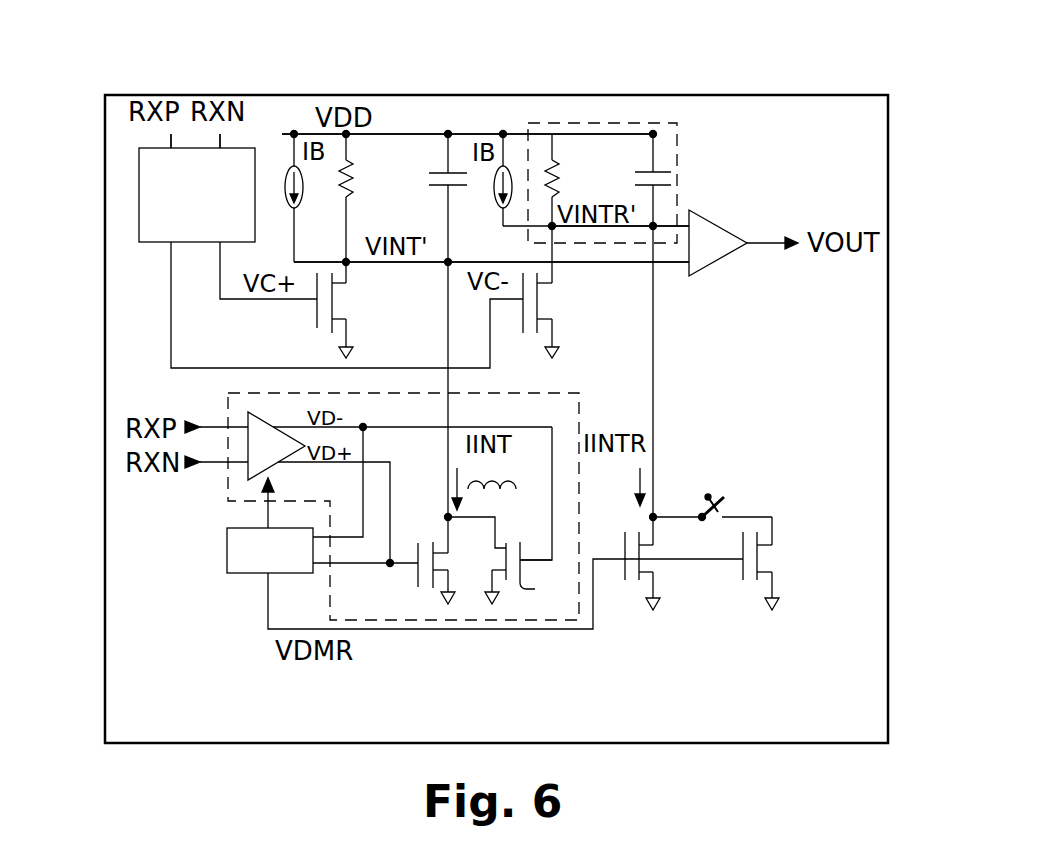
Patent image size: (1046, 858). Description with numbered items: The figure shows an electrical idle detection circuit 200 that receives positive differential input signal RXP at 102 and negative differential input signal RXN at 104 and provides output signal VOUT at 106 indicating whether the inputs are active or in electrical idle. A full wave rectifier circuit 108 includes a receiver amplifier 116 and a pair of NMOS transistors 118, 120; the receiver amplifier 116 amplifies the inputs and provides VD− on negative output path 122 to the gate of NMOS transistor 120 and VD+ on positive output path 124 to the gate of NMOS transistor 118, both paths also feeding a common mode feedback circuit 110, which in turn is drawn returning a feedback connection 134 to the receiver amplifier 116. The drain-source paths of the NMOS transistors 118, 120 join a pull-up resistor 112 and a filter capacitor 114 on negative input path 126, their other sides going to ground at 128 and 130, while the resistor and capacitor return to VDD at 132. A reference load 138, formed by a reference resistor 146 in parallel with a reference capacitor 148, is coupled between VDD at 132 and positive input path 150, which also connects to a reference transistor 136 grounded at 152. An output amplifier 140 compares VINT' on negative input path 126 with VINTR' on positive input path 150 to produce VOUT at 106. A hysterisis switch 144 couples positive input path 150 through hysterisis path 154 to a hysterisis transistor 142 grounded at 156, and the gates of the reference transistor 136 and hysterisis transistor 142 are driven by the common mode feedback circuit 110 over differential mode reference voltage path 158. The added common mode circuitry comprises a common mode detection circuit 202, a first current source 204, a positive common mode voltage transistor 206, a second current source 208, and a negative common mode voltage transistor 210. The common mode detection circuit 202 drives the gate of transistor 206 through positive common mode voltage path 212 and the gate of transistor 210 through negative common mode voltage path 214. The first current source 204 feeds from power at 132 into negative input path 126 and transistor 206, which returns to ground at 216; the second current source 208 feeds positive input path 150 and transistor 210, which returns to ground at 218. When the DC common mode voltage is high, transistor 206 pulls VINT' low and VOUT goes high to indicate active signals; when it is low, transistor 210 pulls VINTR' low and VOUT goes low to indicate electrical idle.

The electrical idle detection circuit 200 is at (652, 68).
The positive differential input signal RXP 102 is at (165, 141).
The negative differential input signal RXN 104 is at (222, 139).
The common mode detection circuit 202 is at (143, 223).
The positive common mode voltage path 212 is at (218, 302).
The negative common mode voltage path 214 is at (170, 352).
The positive common mode voltage transistor 206 is at (317, 338).
The negative common mode voltage transistor 210 is at (523, 336).
The reference (ground) 216 is at (353, 352).
The reference (ground) 218 is at (560, 350).
The first current source 204 is at (303, 206).
The second current source 208 is at (498, 207).
The pull-up resistor 112 is at (352, 187).
The filter capacitor 114 is at (427, 173).
The VDD (power) 132 is at (372, 133).
The negative input path 126 is at (433, 264).
The reference resistor 146 is at (560, 167).
The reference capacitor 148 is at (638, 172).
The reference load 138 is at (680, 133).
The positive input path 150 is at (653, 227).
The output amplifier 140 is at (722, 262).
The output signal VOUT 106 is at (793, 238).
The receiver amplifier 116 is at (248, 413).
The negative output path 122 is at (370, 420).
The positive output path 124 is at (380, 462).
The common mode feedback signal 134 is at (270, 497).
The full wave rectifier circuit 108 is at (228, 503).
The common mode feedback circuit 110 is at (227, 573).
The NMOS transistor 118 is at (418, 583).
The NMOS transistor 120 is at (511, 569).
The reference voltage (ground) 128 is at (442, 605).
The reference voltage (ground) 130 is at (500, 607).
The reference transistor 136 is at (625, 540).
The hysterisis transistor 142 is at (740, 570).
The hysterisis switch 144 is at (712, 493).
The reference (ground) 152 is at (647, 612).
The hysterisis path 154 is at (732, 512).
The reference (ground) 156 is at (765, 612).
The differential mode reference voltage path 158 is at (567, 633).